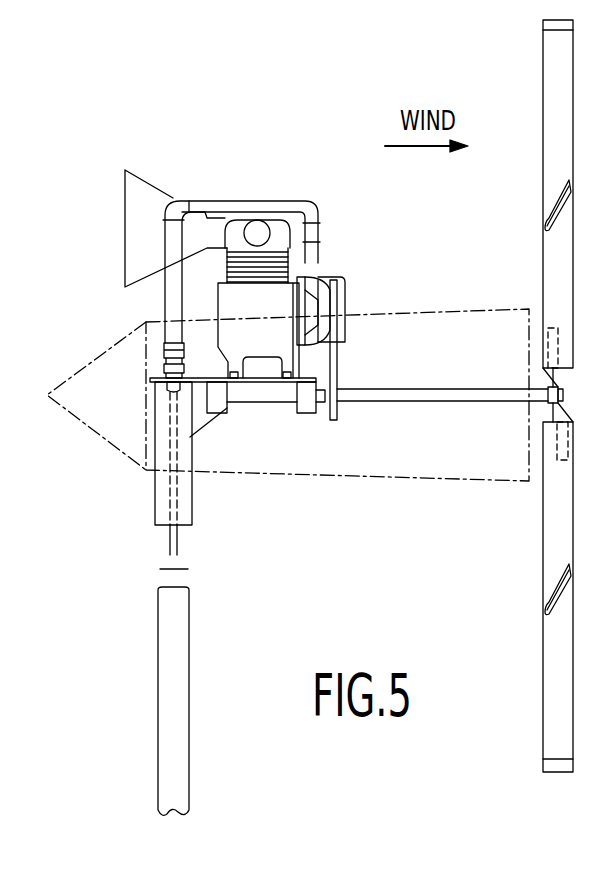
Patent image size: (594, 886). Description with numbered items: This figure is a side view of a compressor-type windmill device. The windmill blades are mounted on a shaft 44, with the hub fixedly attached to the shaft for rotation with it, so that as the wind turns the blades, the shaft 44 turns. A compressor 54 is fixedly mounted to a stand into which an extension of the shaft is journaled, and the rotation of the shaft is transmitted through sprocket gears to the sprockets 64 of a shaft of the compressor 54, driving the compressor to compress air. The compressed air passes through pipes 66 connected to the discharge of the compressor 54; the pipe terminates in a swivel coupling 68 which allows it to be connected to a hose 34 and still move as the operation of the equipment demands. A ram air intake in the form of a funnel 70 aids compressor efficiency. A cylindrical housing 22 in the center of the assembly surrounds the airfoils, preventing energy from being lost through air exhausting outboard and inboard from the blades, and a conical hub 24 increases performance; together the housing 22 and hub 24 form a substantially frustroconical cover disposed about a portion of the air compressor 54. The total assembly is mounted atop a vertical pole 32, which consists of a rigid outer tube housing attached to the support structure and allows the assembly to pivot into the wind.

The cylindrical housing 22 is at (337, 478).
The conical hub 24 is at (82, 422).
The vertical pole 32 is at (168, 668).
The hose 34 is at (170, 544).
The shaft 44 is at (418, 388).
The compressor 54 is at (298, 284).
The sprockets 64 is at (345, 290).
The pipes 66 is at (245, 200).
The swivel coupling 68 is at (164, 360).
The funnel 70 is at (140, 196).